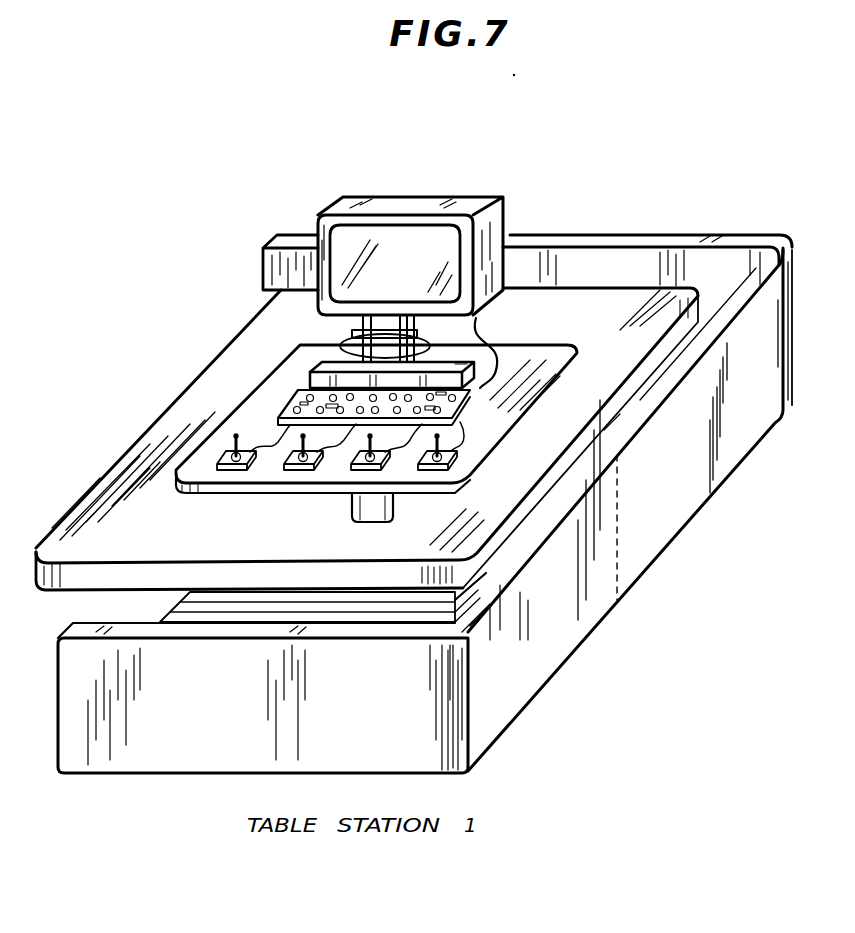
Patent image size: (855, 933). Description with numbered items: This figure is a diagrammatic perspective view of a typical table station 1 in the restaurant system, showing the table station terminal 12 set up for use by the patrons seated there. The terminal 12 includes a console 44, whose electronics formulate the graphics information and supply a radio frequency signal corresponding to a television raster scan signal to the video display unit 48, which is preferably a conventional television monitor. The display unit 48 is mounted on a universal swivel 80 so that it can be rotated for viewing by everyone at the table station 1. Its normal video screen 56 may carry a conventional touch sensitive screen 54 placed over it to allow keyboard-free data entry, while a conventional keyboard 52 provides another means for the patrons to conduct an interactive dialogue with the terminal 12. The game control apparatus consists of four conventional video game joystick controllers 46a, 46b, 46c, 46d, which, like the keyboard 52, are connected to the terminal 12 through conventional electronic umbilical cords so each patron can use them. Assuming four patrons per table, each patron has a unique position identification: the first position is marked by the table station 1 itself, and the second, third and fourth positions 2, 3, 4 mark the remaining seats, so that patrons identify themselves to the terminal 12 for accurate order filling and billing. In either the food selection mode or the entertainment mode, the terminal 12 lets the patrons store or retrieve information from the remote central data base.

The table station 1 is at (263, 698).
The patron position identification 2 is at (553, 547).
The patron position identification 3 is at (630, 509).
The patron position identification 4 is at (647, 260).
The table station terminal 12 is at (488, 324).
The console 44 is at (311, 373).
The video game joystick controller 46a is at (229, 468).
The video game joystick controller 46b is at (303, 468).
The video game joystick controller 46c is at (358, 472).
The video game joystick controller 46d is at (433, 468).
The video display unit 48 is at (312, 278).
The keyboard 52 is at (296, 399).
The touch sensitive screen 54 is at (436, 256).
The video screen 56 is at (446, 244).
The universal swivel 80 is at (352, 334).